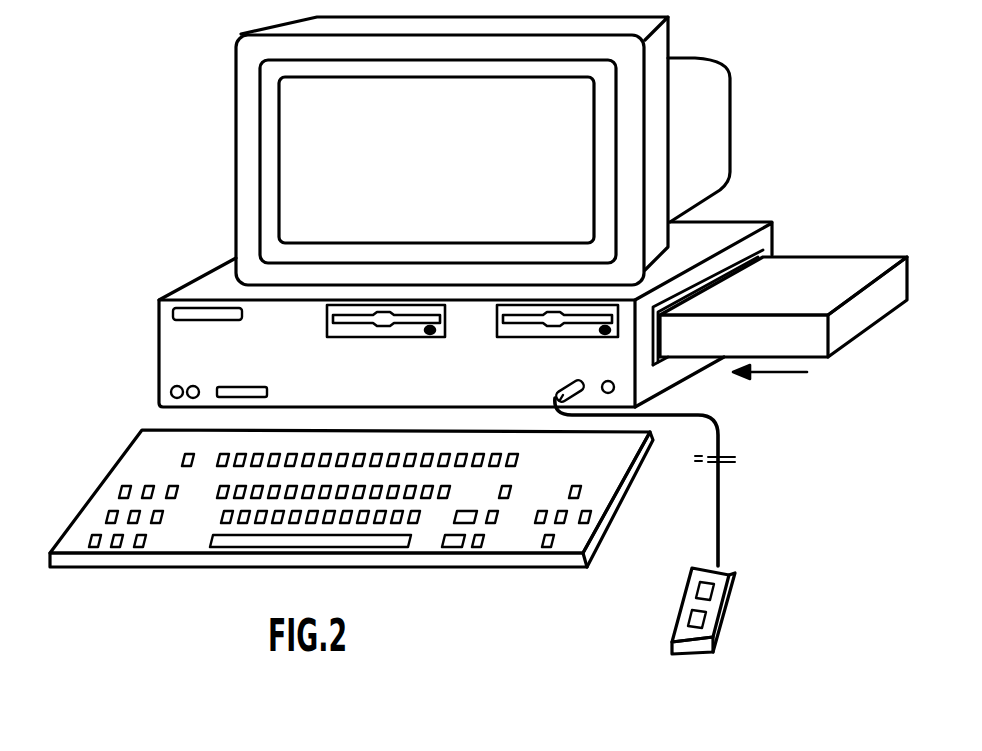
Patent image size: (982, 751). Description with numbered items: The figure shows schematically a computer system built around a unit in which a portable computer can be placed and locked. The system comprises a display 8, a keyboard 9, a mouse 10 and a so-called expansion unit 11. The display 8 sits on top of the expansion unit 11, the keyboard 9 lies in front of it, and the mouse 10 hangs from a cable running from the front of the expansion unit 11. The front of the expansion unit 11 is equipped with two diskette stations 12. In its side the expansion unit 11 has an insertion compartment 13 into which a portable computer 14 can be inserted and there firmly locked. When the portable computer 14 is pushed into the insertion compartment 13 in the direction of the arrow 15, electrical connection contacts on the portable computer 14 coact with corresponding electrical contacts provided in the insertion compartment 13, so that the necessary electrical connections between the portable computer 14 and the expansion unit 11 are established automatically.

The display 8 is at (291, 134).
The keyboard 9 is at (587, 538).
The mouse 10 is at (728, 588).
The expansion unit 11 is at (768, 238).
The diskette stations 12 is at (326, 337).
The insertion compartment 13 is at (731, 274).
The portable computer 14 is at (857, 322).
The arrow 15 is at (787, 372).